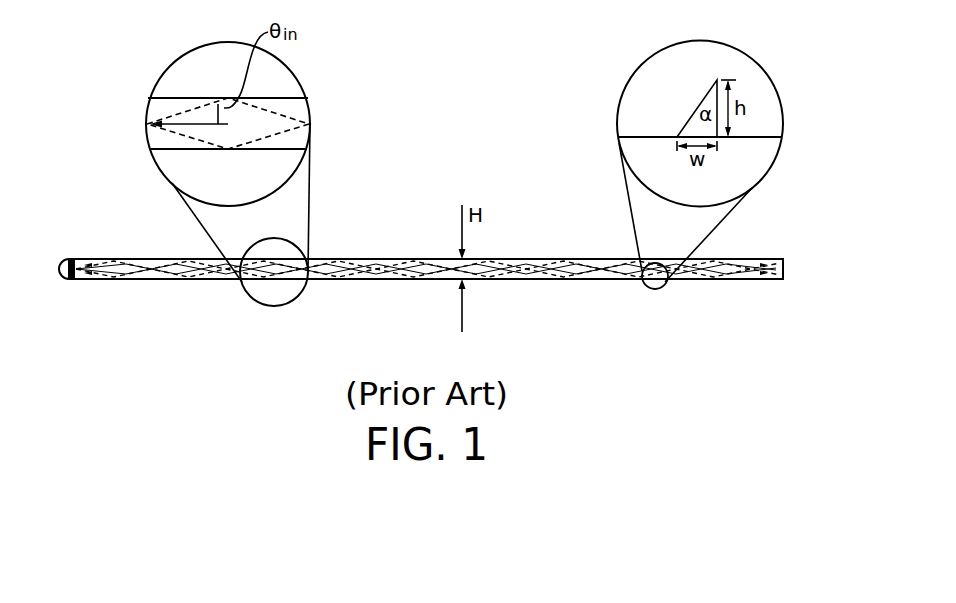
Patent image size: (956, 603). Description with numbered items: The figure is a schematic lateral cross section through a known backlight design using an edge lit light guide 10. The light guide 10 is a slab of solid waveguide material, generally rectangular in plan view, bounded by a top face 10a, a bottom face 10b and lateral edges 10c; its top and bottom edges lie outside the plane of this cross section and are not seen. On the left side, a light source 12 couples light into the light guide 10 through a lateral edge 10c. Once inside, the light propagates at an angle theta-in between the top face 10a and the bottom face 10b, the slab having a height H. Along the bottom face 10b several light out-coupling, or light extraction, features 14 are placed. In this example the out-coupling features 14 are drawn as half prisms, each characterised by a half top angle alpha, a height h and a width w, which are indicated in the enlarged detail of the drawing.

The edge lit light guide 10 is at (146, 246).
The top face 10a is at (381, 258).
The bottom face 10b is at (380, 280).
The lateral edges 10c is at (78, 260).
The light source 12 is at (68, 280).
The light out-coupling features 14 is at (170, 280).